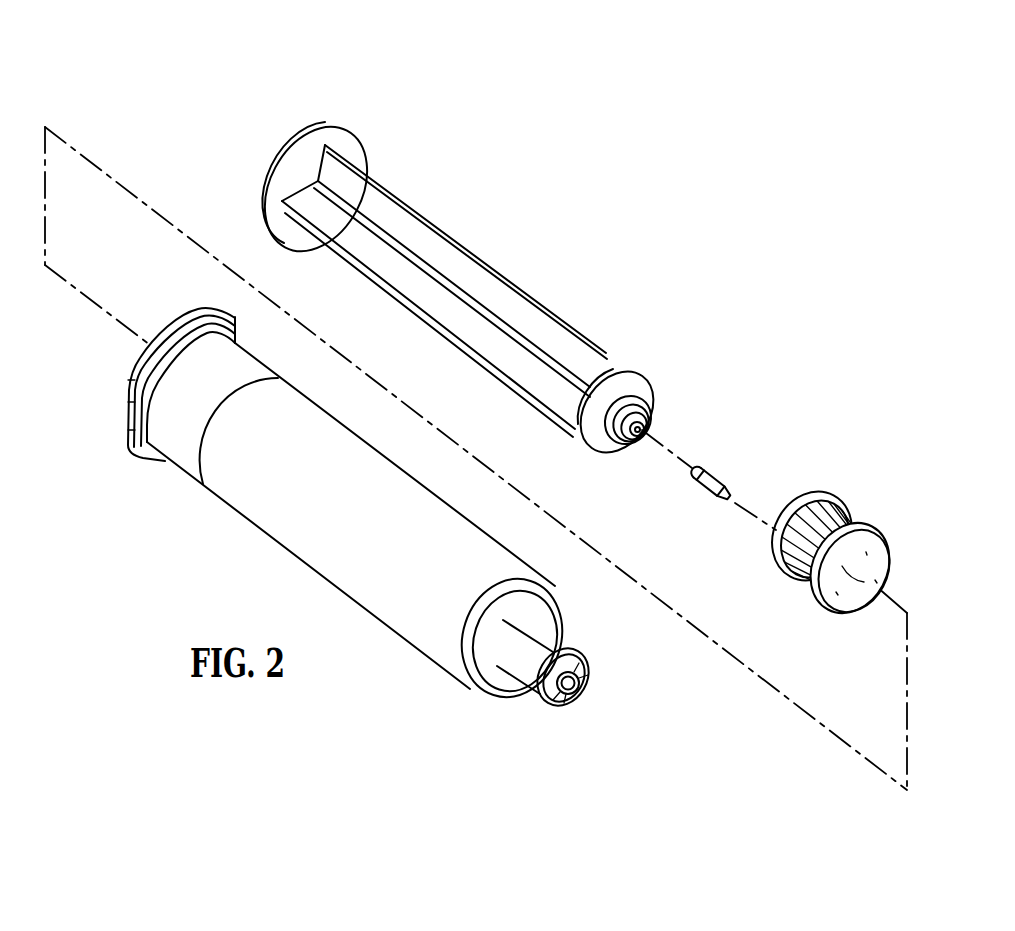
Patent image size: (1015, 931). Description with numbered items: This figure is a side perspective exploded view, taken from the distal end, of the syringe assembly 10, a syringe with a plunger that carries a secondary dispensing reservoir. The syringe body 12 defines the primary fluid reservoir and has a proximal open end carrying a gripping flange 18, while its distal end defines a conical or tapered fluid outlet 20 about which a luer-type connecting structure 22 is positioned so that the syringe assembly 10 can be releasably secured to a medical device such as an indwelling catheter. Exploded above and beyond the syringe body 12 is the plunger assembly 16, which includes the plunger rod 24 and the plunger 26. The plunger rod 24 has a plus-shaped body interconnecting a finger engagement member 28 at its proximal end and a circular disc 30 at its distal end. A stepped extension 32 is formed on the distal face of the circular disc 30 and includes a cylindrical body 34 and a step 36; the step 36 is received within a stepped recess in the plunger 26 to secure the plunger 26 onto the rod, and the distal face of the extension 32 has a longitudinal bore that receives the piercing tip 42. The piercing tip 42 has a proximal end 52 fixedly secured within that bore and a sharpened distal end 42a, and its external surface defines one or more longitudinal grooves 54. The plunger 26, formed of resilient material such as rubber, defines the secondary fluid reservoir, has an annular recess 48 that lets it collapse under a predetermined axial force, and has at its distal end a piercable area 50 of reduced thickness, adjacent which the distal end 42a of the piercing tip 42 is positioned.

The syringe assembly 10 is at (547, 66).
The syringe body 12 is at (385, 557).
The plunger assembly 16 is at (510, 293).
The gripping flange 18 is at (146, 466).
The fluid outlet 20 is at (557, 692).
The connecting structure 22 is at (570, 708).
The plunger rod 24 is at (443, 224).
The plunger 26 is at (873, 538).
The finger engagement member 28 is at (335, 128).
The circular disc 30 is at (666, 401).
The stepped extension 32 is at (652, 399).
The cylindrical body 34 is at (626, 450).
The step 36 is at (613, 448).
The piercing tip 42 is at (744, 486).
The sharpened distal end 42a is at (731, 508).
The annular recess 48 is at (806, 588).
The piercable area 50 is at (870, 579).
The proximal end 52 is at (695, 485).
The longitudinal grooves 54 is at (719, 472).